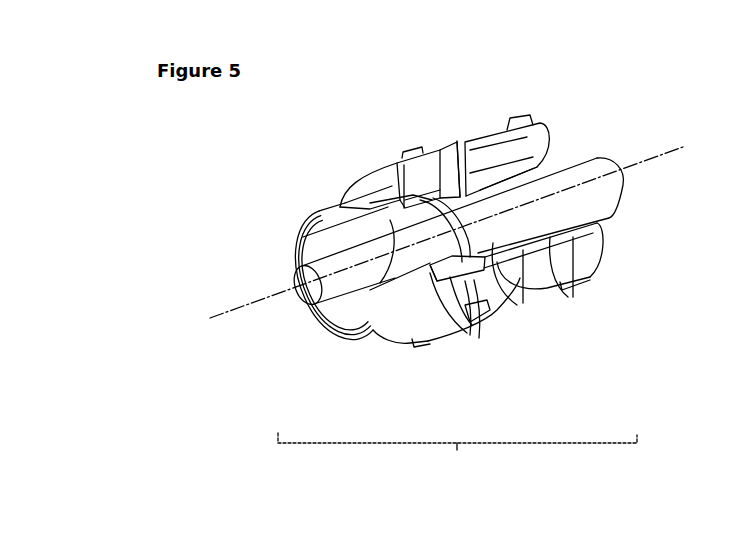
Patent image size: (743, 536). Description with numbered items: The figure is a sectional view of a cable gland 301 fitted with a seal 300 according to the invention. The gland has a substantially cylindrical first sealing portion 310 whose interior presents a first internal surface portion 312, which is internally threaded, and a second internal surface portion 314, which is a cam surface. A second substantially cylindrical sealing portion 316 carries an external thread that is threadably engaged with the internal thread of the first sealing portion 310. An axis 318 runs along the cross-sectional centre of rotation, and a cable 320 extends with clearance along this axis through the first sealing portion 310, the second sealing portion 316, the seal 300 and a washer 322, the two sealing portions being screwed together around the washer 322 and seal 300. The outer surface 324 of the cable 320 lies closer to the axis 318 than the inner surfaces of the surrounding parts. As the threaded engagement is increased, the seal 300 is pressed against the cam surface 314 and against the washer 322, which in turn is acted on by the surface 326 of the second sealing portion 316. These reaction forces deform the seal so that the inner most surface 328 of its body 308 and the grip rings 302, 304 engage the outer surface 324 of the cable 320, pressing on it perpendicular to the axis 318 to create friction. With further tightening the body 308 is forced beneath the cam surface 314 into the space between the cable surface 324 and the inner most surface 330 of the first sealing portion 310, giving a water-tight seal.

The seal 300 is at (450, 267).
The cable gland 301 is at (457, 453).
The grip ring 302 is at (462, 283).
The grip ring 304 is at (485, 258).
The body of the seal 308 is at (437, 185).
The first sealing portion 310 is at (398, 307).
The first internal surface portion 312 is at (442, 153).
The second internal surface portion 314 is at (400, 191).
The second sealing portion 316 is at (533, 278).
The axis 318 is at (655, 157).
The cable 320 is at (333, 287).
The washer 322 is at (463, 194).
The outer surface of the cable 324 is at (612, 229).
The surface of the second sealing portion 326 is at (528, 158).
The inner most surface of the body of the seal 328 is at (409, 205).
The inner most surface of the first sealing portion 330 is at (335, 242).